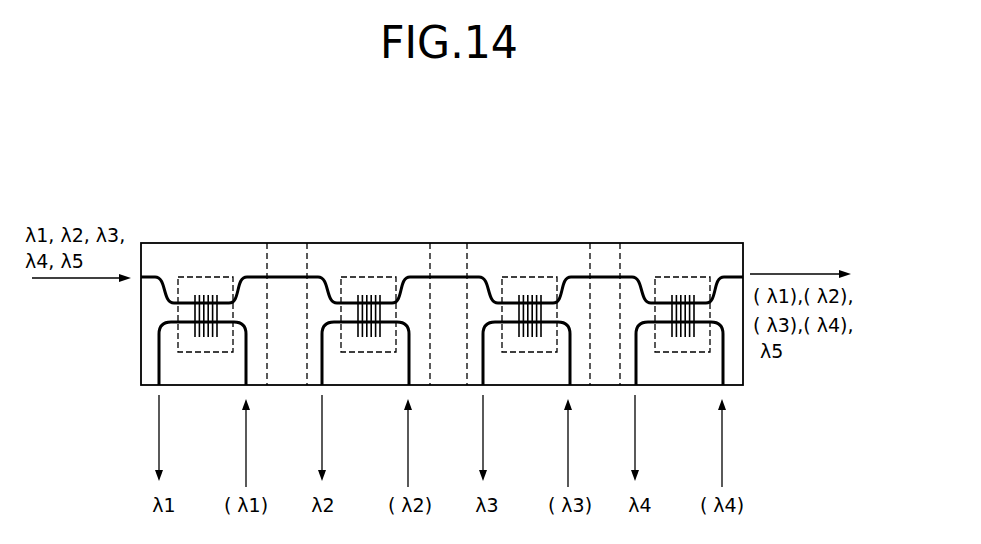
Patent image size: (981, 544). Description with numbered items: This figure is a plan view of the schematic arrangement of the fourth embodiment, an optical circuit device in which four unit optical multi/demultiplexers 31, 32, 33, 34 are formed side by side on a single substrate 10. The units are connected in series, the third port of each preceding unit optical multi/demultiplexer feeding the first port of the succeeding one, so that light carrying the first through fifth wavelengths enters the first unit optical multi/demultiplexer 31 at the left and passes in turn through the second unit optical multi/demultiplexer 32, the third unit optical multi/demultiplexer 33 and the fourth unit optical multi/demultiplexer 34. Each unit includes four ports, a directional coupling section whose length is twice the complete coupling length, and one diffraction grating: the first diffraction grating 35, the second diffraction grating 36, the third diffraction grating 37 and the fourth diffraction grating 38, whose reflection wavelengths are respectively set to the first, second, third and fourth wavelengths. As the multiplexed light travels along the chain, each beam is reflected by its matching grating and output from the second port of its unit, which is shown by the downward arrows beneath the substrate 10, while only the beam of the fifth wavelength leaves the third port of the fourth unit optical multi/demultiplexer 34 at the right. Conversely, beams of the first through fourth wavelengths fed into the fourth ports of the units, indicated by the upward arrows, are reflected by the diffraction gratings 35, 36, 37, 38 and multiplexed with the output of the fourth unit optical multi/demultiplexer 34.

The substrate 10 is at (141, 367).
The first unit optical multi/demultiplexer 31 is at (163, 243).
The second unit optical multi/demultiplexer 32 is at (328, 243).
The third unit optical multi/demultiplexer 33 is at (488, 243).
The fourth unit optical multi/demultiplexer 34 is at (640, 243).
The first diffraction grating 35 is at (208, 290).
The second diffraction grating 36 is at (370, 290).
The third diffraction grating 37 is at (530, 290).
The fourth diffraction grating 38 is at (683, 290).